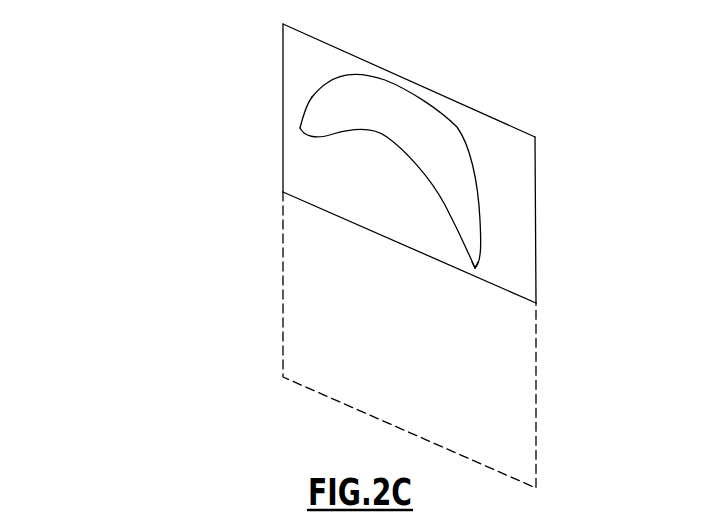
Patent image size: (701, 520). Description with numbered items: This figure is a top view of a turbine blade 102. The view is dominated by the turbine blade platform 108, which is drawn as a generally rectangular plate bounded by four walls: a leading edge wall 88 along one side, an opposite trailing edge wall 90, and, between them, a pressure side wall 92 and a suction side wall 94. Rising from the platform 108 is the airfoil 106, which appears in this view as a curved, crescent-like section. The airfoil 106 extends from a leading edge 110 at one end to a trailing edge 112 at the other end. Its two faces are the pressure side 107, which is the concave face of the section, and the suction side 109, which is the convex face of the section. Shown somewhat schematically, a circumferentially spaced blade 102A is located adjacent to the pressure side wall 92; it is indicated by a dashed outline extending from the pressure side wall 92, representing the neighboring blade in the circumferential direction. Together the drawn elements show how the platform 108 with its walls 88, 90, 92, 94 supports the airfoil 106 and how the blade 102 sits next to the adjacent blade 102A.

The anode assembly 102 is at (116, 74).
The circumferentially spaced blade 102A is at (317, 320).
The leading edge wall 88 is at (283, 147).
The trailing edge wall 90 is at (537, 227).
The pressure side wall 92 is at (352, 222).
The suction side wall 94 is at (452, 97).
The airfoil 106 is at (447, 172).
The pressure side 107 is at (378, 137).
The turbine blade platform 108 is at (478, 128).
The suction side 109 is at (478, 203).
The leading edge 110 is at (300, 128).
The trailing edge 112 is at (475, 270).